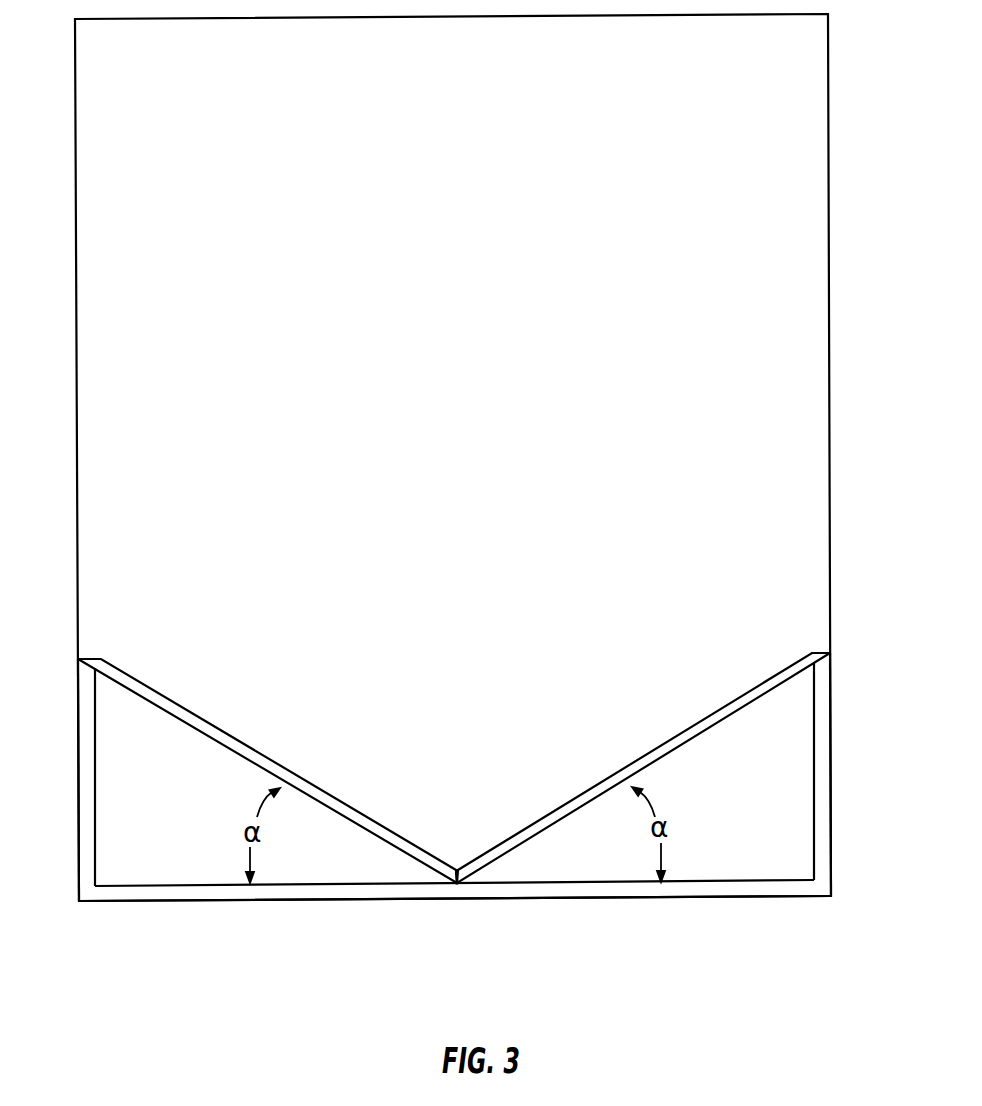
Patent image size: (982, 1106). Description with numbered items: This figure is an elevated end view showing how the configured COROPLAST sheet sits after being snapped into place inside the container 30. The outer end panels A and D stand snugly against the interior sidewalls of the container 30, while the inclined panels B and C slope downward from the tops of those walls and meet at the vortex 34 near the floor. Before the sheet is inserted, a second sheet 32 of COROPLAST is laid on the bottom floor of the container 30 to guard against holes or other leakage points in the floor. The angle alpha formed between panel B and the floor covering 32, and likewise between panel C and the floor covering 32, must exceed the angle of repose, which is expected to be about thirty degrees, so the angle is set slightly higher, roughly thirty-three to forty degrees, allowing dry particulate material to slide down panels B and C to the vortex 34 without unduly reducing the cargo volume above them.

The container 30 is at (484, 457).
The second sheet 32 is at (484, 855).
The vortex 34 is at (487, 913).
The panel A is at (63, 780).
The panel B is at (267, 771).
The panel C is at (643, 768).
The panel D is at (851, 774).